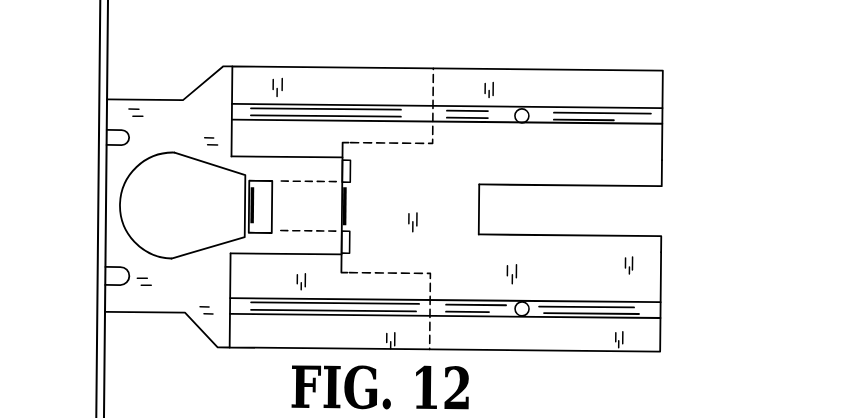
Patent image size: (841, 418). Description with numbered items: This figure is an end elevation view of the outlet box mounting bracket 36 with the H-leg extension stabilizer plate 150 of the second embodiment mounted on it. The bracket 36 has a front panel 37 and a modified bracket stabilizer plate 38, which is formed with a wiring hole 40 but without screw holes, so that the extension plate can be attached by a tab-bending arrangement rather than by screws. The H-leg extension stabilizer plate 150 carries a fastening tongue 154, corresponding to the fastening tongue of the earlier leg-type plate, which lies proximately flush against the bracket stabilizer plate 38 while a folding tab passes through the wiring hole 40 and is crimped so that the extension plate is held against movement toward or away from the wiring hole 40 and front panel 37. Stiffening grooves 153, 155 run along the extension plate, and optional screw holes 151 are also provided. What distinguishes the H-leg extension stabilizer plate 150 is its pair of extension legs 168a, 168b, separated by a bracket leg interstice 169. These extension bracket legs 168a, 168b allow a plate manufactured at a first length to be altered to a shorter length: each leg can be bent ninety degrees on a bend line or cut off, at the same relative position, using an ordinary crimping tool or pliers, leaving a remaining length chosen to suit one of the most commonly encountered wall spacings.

The outlet box mounting bracket 36 is at (92, 247).
The front panel 37 is at (96, 384).
The bracket stabilizer plate 38 is at (210, 97).
The wiring hole 40 is at (200, 242).
The H-leg extension stabilizer plate 150 is at (527, 60).
The screw holes 151 is at (521, 123).
The stiffening groove 153 is at (616, 116).
The fastening tongue 154 is at (319, 201).
The stiffening groove 155 is at (601, 306).
The extension leg 168a is at (651, 155).
The extension leg 168b is at (649, 271).
The bracket leg interstice 169 is at (614, 216).